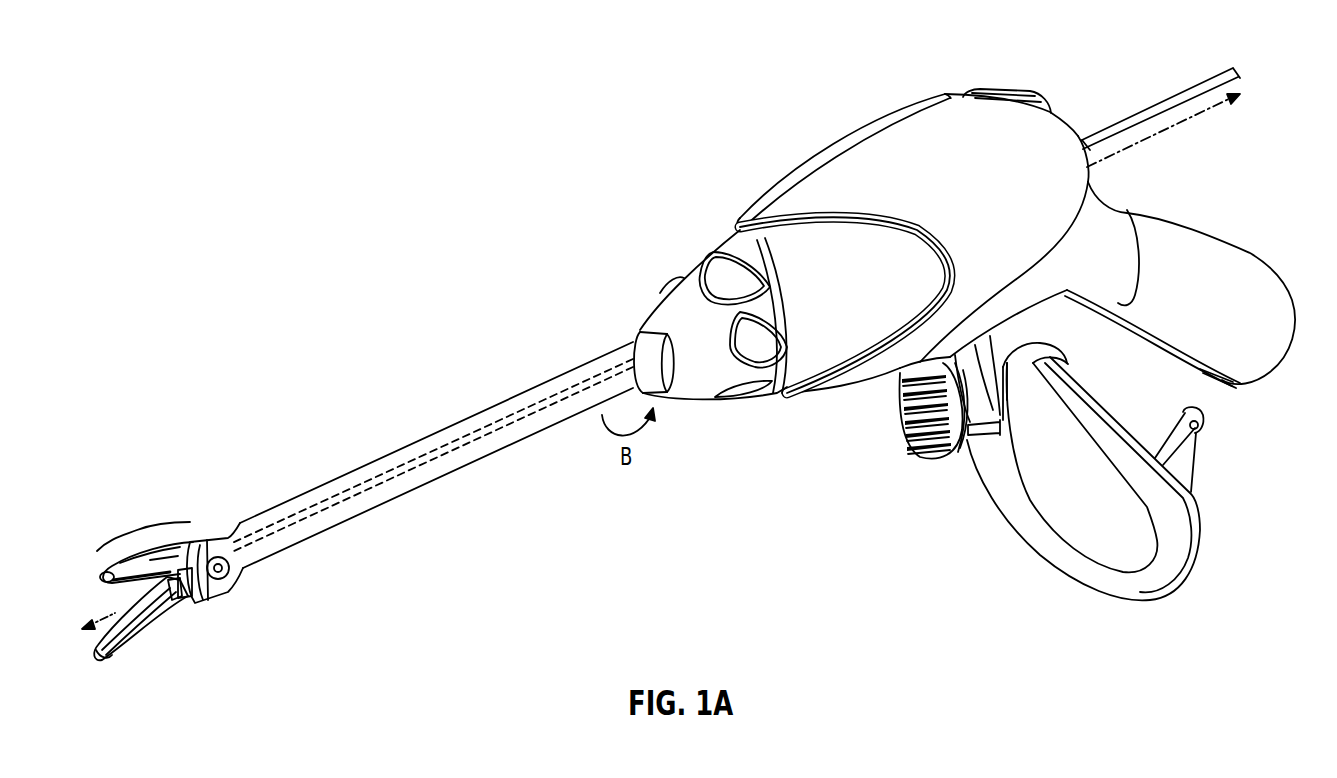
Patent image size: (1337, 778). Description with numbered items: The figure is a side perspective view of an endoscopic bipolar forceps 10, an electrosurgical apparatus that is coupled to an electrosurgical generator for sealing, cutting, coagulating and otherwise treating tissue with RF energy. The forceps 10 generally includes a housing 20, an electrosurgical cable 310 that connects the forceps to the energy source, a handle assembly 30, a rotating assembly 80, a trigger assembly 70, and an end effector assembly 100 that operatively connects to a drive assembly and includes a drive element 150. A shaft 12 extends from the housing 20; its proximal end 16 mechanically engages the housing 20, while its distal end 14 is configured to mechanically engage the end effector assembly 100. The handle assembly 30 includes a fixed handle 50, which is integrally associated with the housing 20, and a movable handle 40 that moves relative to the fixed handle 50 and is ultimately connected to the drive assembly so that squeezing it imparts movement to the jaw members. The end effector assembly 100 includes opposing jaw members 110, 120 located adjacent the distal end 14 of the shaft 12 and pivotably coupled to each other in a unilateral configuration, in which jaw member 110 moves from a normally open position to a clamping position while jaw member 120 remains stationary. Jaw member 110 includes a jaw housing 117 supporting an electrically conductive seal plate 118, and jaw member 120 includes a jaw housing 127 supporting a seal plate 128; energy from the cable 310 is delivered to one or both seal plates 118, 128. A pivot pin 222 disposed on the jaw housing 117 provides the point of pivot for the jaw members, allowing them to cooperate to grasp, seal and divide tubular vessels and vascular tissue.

The bipolar forceps 10 is at (772, 148).
The shaft 12 is at (457, 458).
The distal end 14 is at (235, 523).
The proximal end 16 is at (613, 362).
The housing 20 is at (1078, 128).
The handle assembly 30 is at (1200, 585).
The movable handle 40 is at (1188, 552).
The fixed handle 50 is at (1273, 291).
The trigger assembly 70 is at (880, 427).
The rotating assembly 80 is at (673, 265).
The end effector assembly 100 is at (160, 592).
The jaw member 110 is at (98, 577).
The seal plate 118 is at (113, 580).
The jaw member 120 is at (143, 627).
The seal plate 128 is at (127, 647).
The jaw housing 117 is at (198, 590).
The jaw housing 127 is at (170, 607).
The pivot pin 222 is at (220, 570).
The drive element 150 is at (480, 432).
The electrosurgical cable 310 is at (1150, 103).